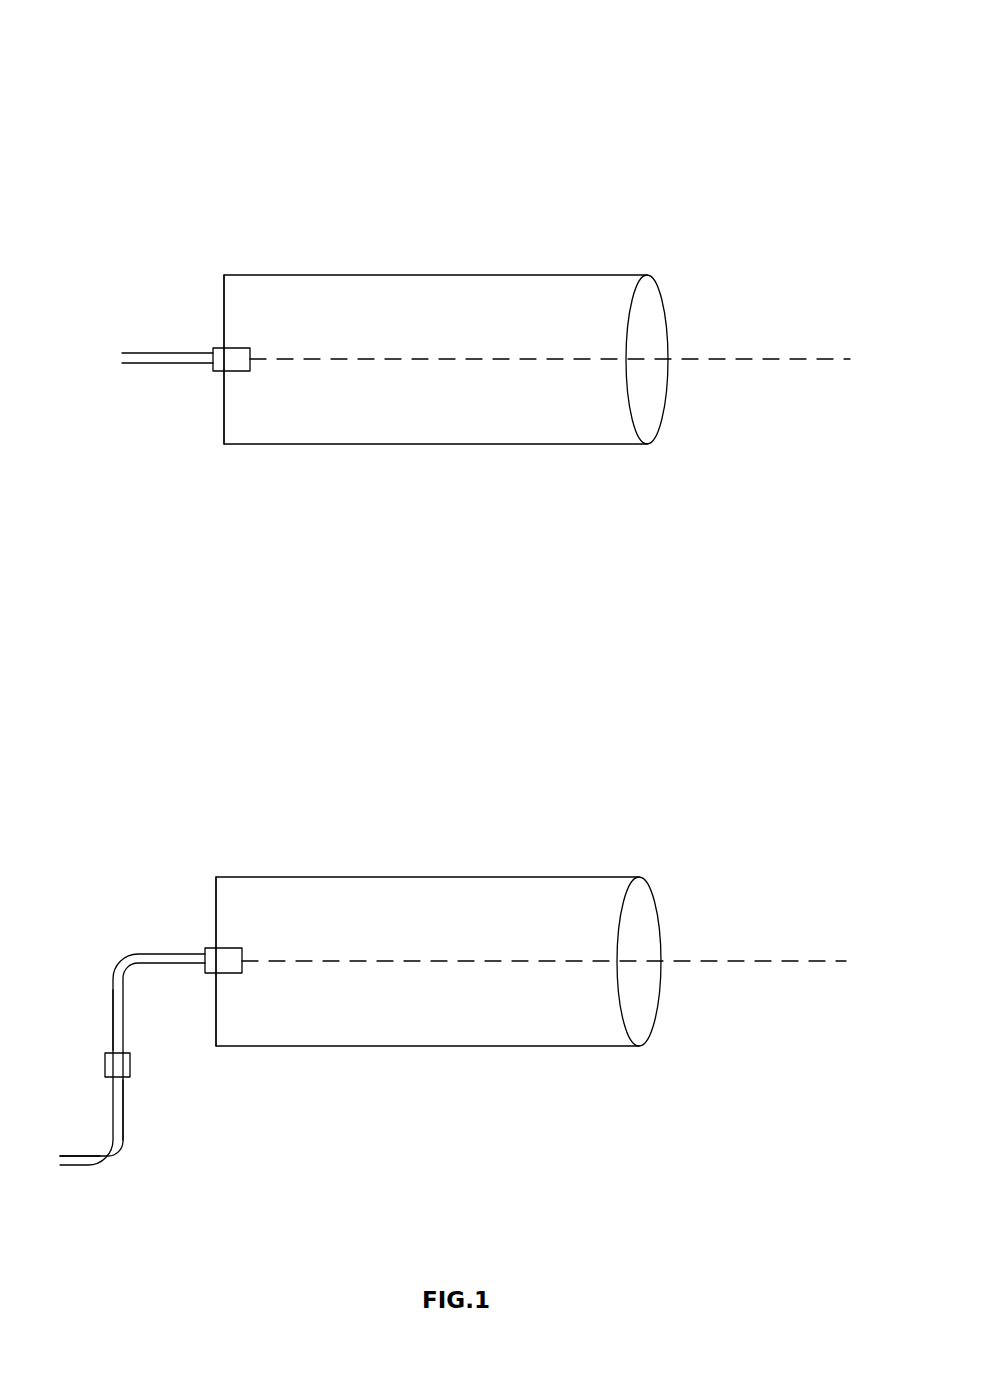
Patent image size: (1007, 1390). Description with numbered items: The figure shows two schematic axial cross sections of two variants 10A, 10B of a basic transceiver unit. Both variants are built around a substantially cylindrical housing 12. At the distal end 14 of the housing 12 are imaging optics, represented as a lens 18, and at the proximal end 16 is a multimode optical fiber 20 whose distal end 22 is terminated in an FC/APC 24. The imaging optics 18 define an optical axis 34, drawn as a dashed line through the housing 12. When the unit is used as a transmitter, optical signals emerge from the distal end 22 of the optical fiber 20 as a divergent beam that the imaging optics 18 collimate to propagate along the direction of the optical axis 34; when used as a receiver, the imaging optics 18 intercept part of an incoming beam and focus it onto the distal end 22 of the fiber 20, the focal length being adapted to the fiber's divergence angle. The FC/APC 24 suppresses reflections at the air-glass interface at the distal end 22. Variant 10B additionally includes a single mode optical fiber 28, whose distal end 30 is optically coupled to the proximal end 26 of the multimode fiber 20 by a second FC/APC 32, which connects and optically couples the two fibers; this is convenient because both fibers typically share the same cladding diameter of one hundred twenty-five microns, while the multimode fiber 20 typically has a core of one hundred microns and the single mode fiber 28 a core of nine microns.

The first transceiver unit variant 10A is at (566, 72).
The second transceiver unit variant 10B is at (558, 673).
The housing 12 is at (428, 275).
The distal end of housing 14 is at (620, 275).
The proximal end of housing 16 is at (262, 285).
The imaging optics 18 is at (650, 317).
The multimode optical fiber 20 is at (136, 350).
The distal end of multimode optical fiber 22 is at (196, 357).
The FC/APC 24 is at (247, 353).
The proximal end of multimode optical fiber 26 is at (121, 1023).
The single mode optical fiber 28 is at (113, 1154).
The distal end of single mode optical fiber 30 is at (121, 1107).
The FC/APC 32 is at (121, 1065).
The optical axis 34 is at (793, 359).